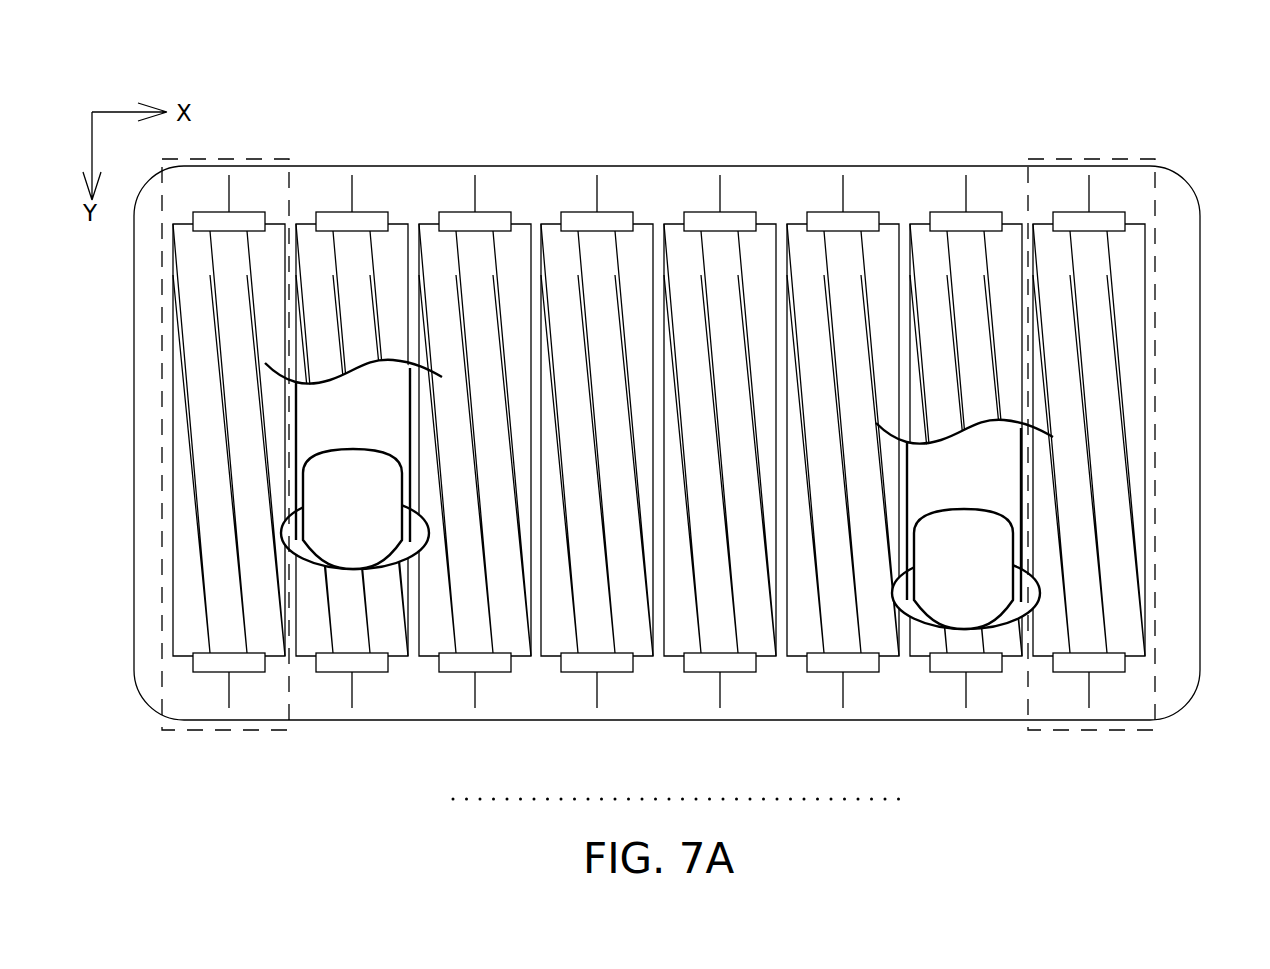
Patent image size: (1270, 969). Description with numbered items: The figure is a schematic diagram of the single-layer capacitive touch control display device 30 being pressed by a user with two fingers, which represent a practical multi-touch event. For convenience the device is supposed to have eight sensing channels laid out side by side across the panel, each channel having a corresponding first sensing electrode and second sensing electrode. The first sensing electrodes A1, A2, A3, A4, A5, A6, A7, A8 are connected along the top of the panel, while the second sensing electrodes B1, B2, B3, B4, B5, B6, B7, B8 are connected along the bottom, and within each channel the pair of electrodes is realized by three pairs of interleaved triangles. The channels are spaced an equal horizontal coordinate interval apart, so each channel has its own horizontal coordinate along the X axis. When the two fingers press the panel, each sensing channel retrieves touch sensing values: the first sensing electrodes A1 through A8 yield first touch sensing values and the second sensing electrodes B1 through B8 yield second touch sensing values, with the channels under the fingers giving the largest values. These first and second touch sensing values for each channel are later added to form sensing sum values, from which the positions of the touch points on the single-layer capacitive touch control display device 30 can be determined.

The single-layer capacitive touch control display device 30 is at (1105, 88).
The first sensing electrode A1 is at (247, 178).
The first sensing electrode A2 is at (370, 178).
The first sensing electrode A3 is at (493, 178).
The first sensing electrode A4 is at (615, 178).
The first sensing electrode A5 is at (738, 178).
The first sensing electrode A6 is at (861, 178).
The first sensing electrode A7 is at (984, 178).
The first sensing electrode A8 is at (1107, 178).
The second sensing electrode B1 is at (245, 711).
The second sensing electrode B2 is at (368, 711).
The second sensing electrode B3 is at (491, 711).
The second sensing electrode B4 is at (613, 711).
The second sensing electrode B5 is at (736, 711).
The second sensing electrode B6 is at (859, 711).
The second sensing electrode B7 is at (982, 711).
The second sensing electrode B8 is at (1105, 711).